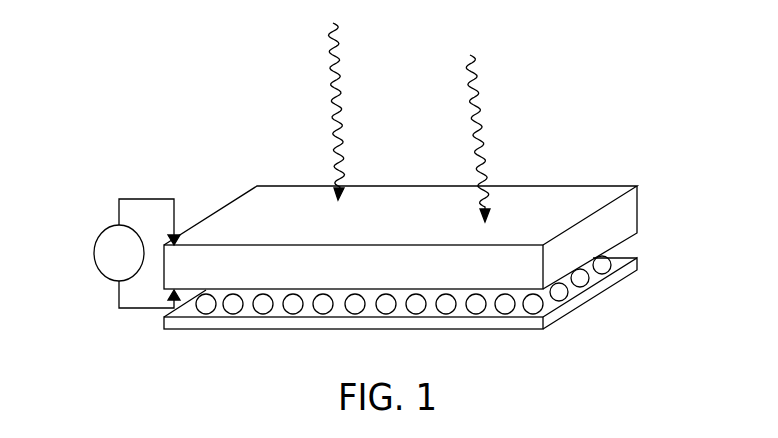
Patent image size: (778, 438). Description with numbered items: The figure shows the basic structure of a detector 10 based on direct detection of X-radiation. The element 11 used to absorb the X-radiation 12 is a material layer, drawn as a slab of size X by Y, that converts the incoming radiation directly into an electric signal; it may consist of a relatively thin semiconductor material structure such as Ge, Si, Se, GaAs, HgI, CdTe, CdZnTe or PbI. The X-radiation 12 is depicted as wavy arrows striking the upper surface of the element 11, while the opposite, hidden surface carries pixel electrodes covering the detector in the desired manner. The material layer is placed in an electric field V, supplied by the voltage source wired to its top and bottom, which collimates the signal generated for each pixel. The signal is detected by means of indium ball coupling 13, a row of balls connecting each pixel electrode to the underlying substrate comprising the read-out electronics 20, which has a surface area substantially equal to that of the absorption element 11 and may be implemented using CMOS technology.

The detector 10 is at (52, 267).
The element 11 is at (630, 214).
The X-radiation 12 is at (382, 122).
The indium ball coupling 13 is at (561, 292).
The read-out electronics 20 is at (627, 268).